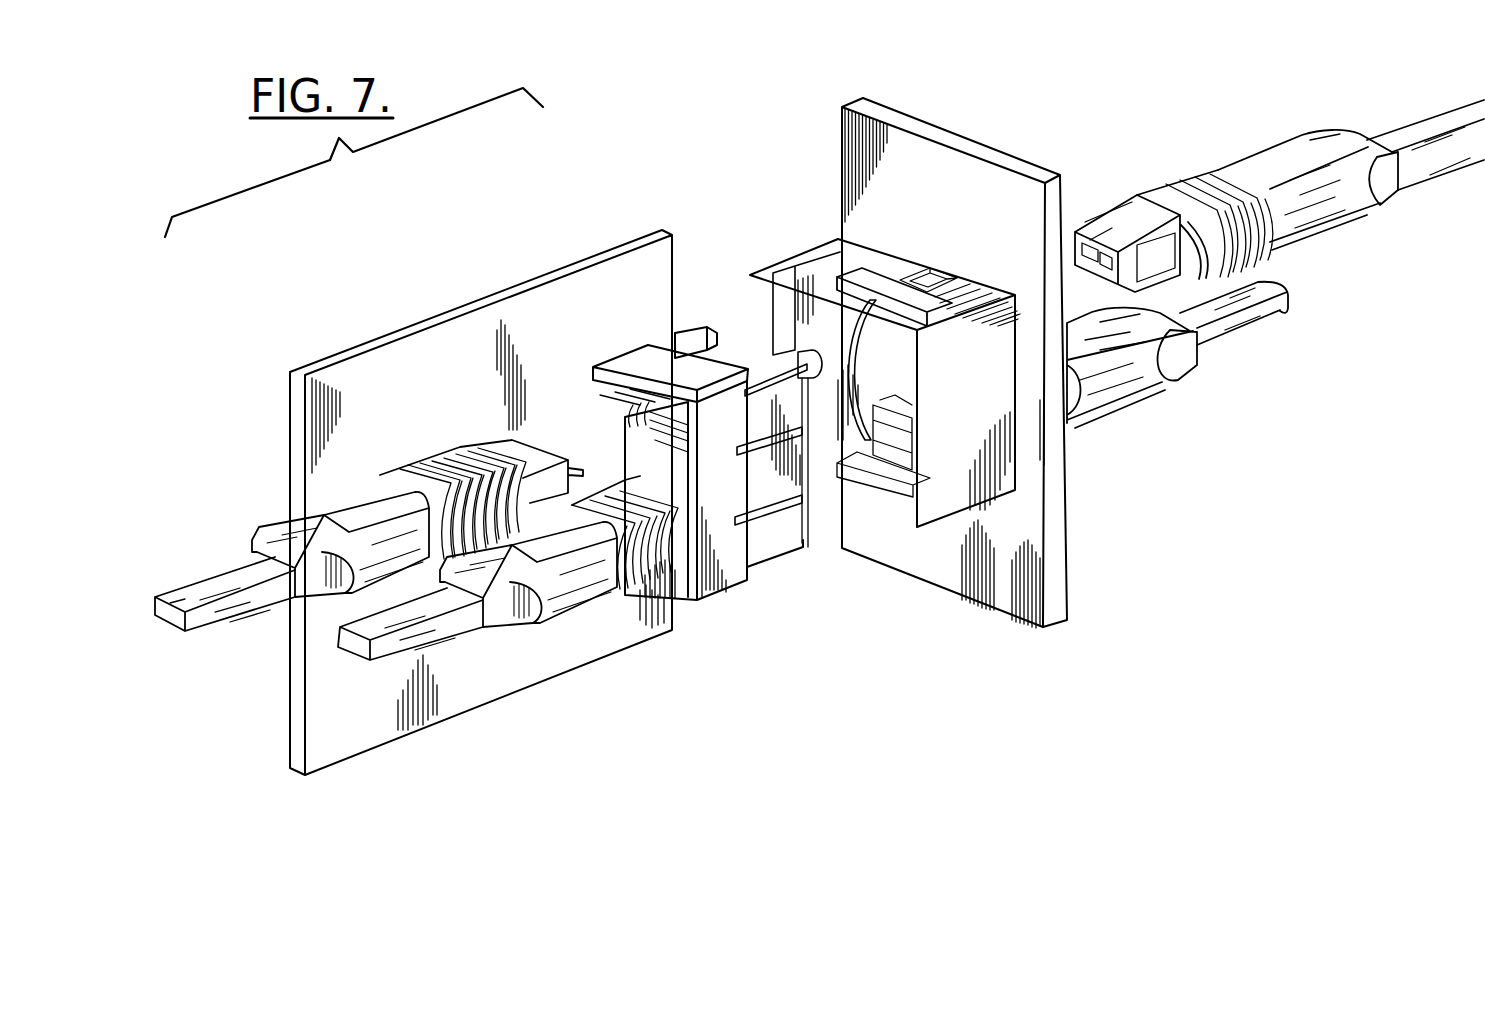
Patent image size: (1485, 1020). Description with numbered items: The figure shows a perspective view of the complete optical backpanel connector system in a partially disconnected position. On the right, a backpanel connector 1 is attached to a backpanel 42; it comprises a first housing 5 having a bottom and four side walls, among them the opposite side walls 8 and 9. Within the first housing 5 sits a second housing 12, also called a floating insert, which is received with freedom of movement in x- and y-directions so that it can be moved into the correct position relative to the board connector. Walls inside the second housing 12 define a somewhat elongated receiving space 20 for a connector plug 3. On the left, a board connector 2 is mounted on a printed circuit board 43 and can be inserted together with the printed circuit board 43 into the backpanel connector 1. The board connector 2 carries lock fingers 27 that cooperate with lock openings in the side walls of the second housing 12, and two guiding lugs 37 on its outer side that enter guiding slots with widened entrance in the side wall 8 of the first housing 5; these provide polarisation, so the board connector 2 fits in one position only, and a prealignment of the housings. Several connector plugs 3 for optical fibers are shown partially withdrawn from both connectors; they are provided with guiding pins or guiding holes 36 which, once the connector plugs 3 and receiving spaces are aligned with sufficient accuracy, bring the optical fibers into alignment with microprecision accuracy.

The backpanel connector 1 is at (941, 383).
The board connector 2 is at (721, 432).
The connector plugs 3 is at (819, 409).
The first housing 5 is at (882, 252).
The side wall 8 is at (1000, 468).
The side wall 9 is at (773, 273).
The second housing 12 is at (934, 425).
The receiving space 20 is at (860, 320).
The lock fingers 27 is at (740, 355).
The guiding holes 36 is at (1115, 265).
The guiding lugs 37 is at (775, 452).
The backpanel 42 is at (943, 130).
The printed circuit board 43 is at (373, 712).